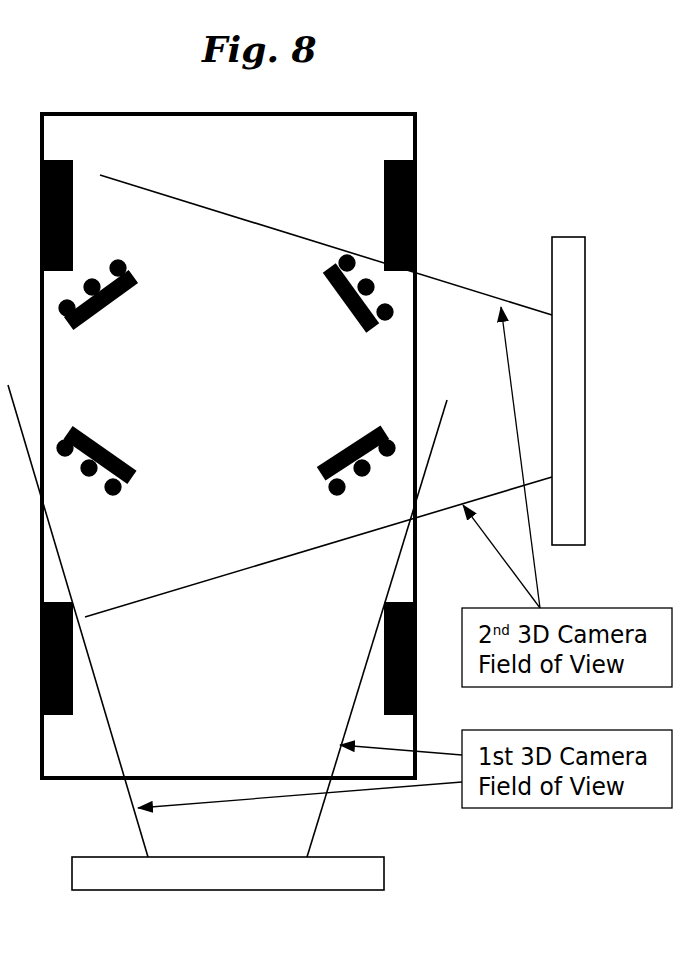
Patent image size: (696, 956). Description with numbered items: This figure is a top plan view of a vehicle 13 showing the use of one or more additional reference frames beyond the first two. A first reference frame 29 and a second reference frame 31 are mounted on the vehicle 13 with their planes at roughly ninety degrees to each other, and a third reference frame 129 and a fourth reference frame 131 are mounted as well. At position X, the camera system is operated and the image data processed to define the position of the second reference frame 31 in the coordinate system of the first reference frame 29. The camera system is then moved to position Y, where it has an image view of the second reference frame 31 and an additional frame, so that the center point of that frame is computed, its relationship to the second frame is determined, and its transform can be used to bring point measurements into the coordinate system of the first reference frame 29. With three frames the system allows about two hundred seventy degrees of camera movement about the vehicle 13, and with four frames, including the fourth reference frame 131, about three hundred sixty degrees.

The vehicle 13 is at (418, 128).
The fourth reference frame 131 is at (102, 318).
The third reference frame 129 is at (368, 335).
The first reference frame 29 is at (125, 485).
The second reference frame 31 is at (360, 480).